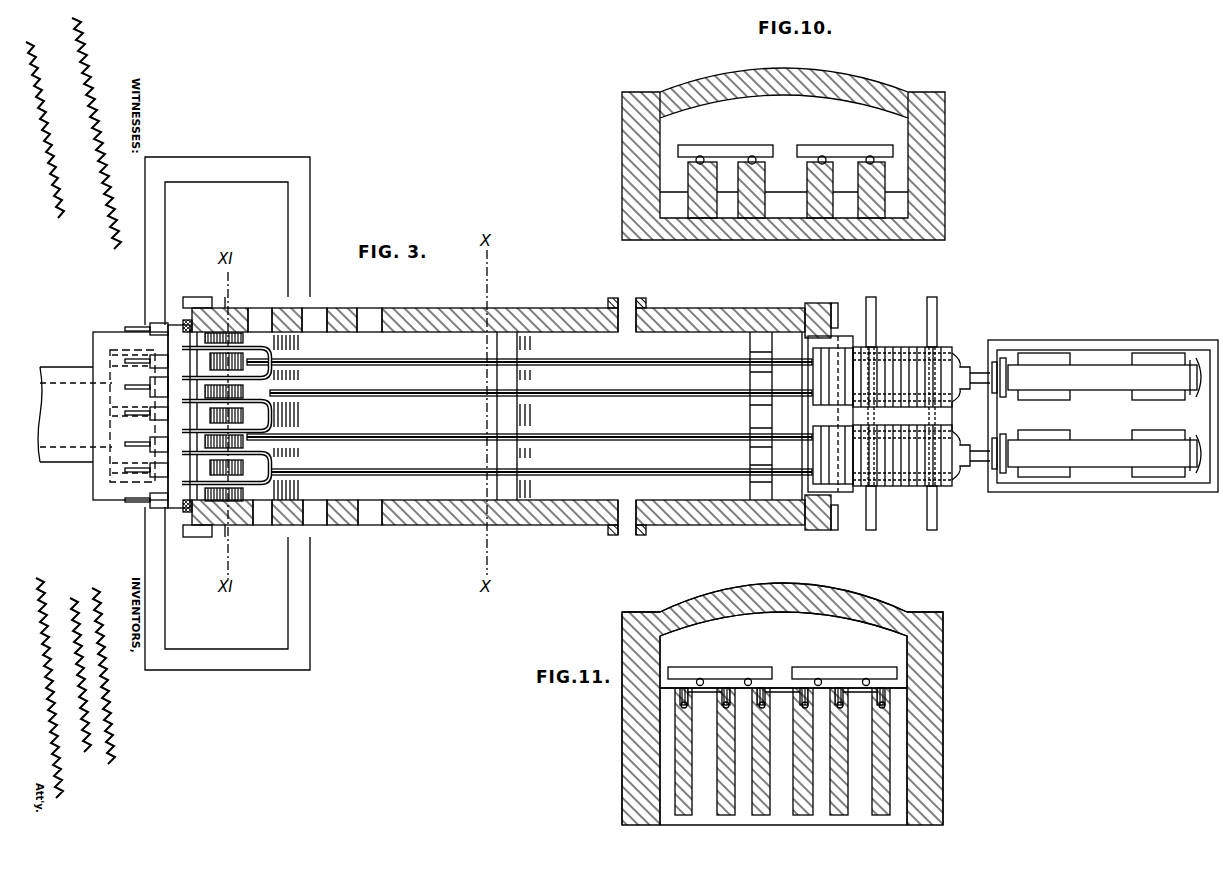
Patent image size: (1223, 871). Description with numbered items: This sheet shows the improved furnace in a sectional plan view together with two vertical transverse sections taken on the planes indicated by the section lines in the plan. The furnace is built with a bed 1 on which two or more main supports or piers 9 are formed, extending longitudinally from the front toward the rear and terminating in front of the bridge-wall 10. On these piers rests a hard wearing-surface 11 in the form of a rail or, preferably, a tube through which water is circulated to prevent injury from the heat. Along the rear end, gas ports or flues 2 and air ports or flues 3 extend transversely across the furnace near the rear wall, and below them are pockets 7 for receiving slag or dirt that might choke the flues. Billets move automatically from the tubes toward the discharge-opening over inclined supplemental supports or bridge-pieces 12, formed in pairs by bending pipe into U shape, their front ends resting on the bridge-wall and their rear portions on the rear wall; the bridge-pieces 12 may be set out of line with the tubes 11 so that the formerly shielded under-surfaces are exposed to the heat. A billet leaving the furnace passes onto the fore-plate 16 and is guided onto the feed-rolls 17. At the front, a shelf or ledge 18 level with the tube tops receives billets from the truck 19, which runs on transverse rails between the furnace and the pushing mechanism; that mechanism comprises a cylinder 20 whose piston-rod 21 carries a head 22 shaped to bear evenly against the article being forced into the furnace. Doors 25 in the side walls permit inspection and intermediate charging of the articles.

In FIG. 3, the bed 1 is at (510, 417).
In FIG. 10, the bed 1 is at (787, 194).
In FIG. 11, the bed 1 is at (782, 704).
In FIG. 3, the gas ports or flues 2 is at (243, 338).
In FIG. 11, the gas ports or flues 2 is at (782, 751).
In FIG. 11, the air ports or flues 3 is at (794, 751).
In FIG. 3, the pockets 7 is at (227, 413).
In FIG. 3, the main supports or piers 9 is at (616, 357).
In FIG. 10, the main supports or piers 9 is at (738, 181).
In FIG. 11, the main supports or piers 9 is at (692, 686).
In FIG. 3, the bridge-wall 10 is at (290, 416).
In FIG. 3, the wearing-surface 11 is at (438, 360).
In FIG. 10, the wearing-surface 11 is at (752, 156).
In FIG. 11, the wearing-surface 11 is at (748, 679).
In FIG. 3, the supplemental supports or bridge-pieces 12 is at (200, 360).
In FIG. 11, the supplemental supports or bridge-pieces 12 is at (720, 700).
In FIG. 3, the fore-plate 16 is at (141, 415).
In FIG. 3, the feed-rolls 17 is at (152, 436).
In FIG. 3, the shelf or ledge 18 is at (846, 342).
In FIG. 3, the truck 19 is at (925, 417).
In FIG. 3, the cylinder 20 is at (1103, 416).
In FIG. 3, the piston-rod 21 is at (974, 372).
In FIG. 3, the head 22 is at (964, 416).
In FIG. 3, the doors 25 is at (627, 546).